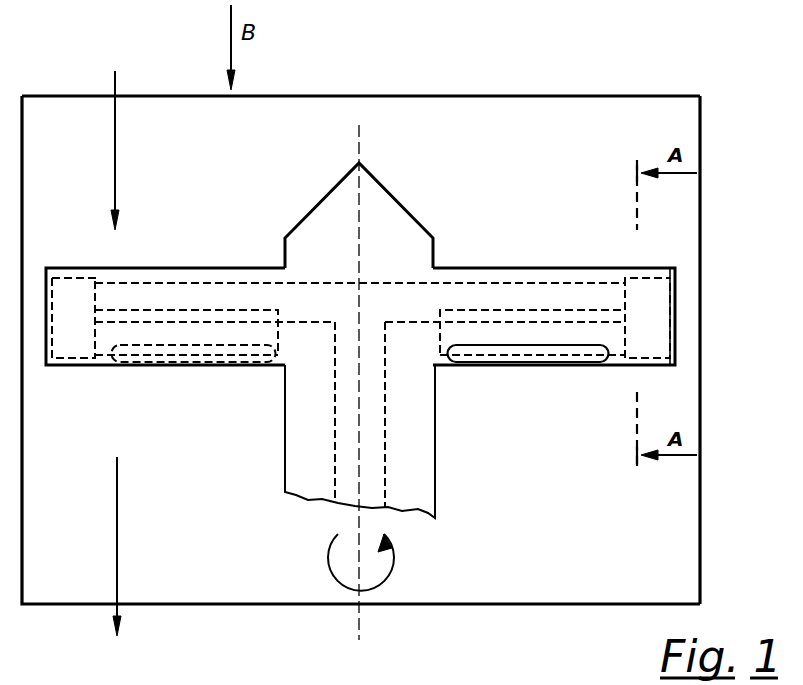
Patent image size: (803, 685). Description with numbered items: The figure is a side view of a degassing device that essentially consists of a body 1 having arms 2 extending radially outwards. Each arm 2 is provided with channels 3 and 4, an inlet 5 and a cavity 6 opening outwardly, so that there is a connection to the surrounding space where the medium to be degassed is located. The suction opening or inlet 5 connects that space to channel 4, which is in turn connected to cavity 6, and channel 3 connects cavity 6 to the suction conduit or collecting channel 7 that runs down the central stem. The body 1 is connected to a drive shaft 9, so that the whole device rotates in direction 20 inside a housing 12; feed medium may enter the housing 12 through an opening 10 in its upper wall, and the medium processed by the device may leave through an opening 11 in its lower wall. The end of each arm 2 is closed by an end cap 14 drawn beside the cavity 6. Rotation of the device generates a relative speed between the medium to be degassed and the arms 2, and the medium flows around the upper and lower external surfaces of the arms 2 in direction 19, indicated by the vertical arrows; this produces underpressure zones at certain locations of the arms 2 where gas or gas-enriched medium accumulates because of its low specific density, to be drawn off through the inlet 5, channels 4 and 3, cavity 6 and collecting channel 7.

The body 1 is at (374, 208).
The arms 2 is at (243, 266).
The channel 3 is at (572, 300).
The channel 4 is at (503, 333).
The inlet 5 is at (508, 366).
The cavity 6 is at (655, 325).
The collecting channel 7 is at (352, 458).
The drive shaft 9 is at (415, 465).
The opening 10 is at (485, 96).
The opening 11 is at (555, 604).
The housing 12 is at (700, 192).
The end cap 14 is at (678, 302).
The direction 19 is at (115, 168).
The direction 20 is at (395, 563).